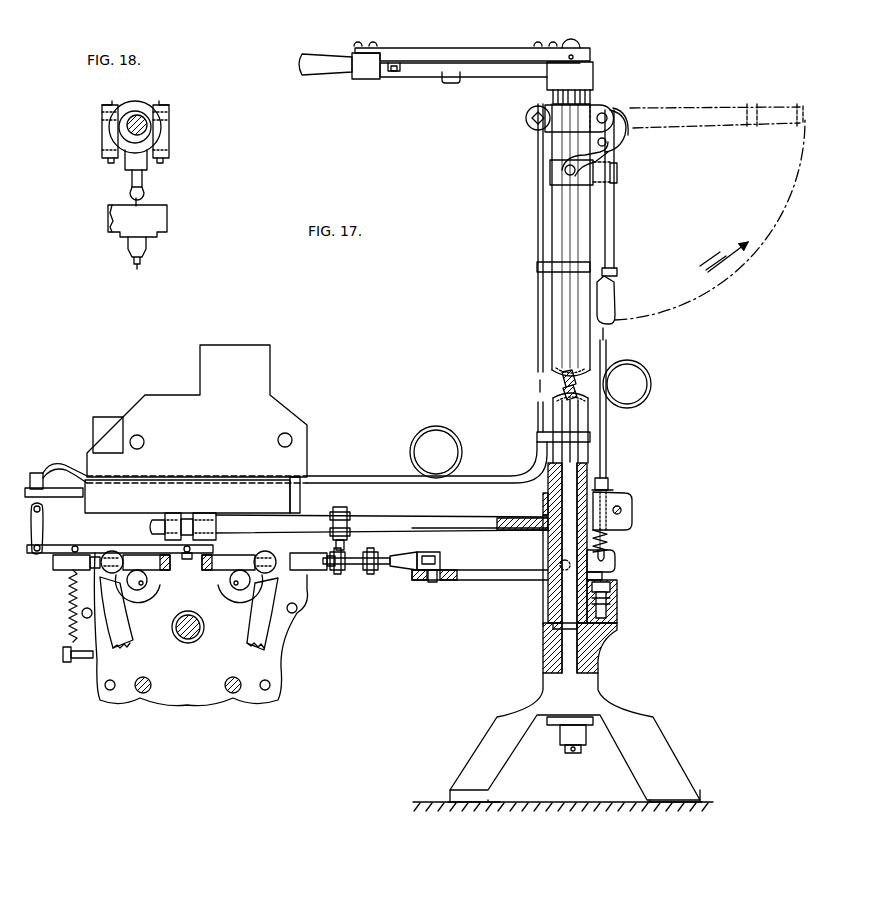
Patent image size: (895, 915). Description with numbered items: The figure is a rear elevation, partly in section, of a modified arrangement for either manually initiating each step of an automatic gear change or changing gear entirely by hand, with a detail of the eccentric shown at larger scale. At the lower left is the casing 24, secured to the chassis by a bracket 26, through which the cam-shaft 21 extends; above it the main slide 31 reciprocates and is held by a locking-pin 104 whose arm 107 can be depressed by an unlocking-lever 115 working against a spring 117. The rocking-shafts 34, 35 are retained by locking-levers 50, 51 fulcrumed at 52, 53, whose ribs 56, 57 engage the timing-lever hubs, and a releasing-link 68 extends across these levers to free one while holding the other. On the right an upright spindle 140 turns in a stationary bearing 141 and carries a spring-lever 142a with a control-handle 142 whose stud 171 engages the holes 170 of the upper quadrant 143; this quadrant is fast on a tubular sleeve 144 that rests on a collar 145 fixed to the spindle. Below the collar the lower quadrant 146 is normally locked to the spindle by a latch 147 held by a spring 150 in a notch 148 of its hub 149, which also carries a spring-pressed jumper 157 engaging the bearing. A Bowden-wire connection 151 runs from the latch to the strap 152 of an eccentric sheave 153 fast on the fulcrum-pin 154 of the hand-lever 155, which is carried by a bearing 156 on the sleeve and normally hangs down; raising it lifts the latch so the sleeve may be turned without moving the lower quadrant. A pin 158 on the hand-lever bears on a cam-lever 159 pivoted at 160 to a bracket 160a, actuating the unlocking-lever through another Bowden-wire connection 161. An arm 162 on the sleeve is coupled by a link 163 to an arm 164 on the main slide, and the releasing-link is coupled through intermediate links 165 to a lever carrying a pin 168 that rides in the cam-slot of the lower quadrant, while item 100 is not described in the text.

In FIG. 17, the cam-shaft 21 is at (188, 642).
In FIG. 17, the casing 24 is at (276, 700).
In FIG. 17, the bracket 26 is at (280, 408).
In FIG. 17, the main slide 31 is at (172, 512).
In FIG. 17, the rocking-shaft 34 is at (137, 585).
In FIG. 17, the rocking-shaft 35 is at (262, 593).
In FIG. 17, the locking-lever 50 is at (110, 640).
In FIG. 17, the locking-lever 51 is at (262, 638).
In FIG. 17, the fulcrum 52 is at (142, 693).
In FIG. 17, the fulcrum 53 is at (233, 693).
In FIG. 17, the rib 56 is at (120, 590).
In FIG. 17, the rib 57 is at (258, 580).
In FIG. 17, the releasing-link 68 is at (65, 572).
In FIG. 17, the plate 100 is at (90, 505).
In FIG. 17, the locking-pin 104 is at (203, 512).
In FIG. 17, the arm 107 is at (187, 565).
In FIG. 17, the unlocking-lever 115 is at (45, 555).
In FIG. 17, the spring 117 is at (70, 634).
In FIG. 17, the upright spindle 140 is at (560, 644).
In FIG. 17, the stationary bearing 141 is at (600, 660).
In FIG. 17, the control-handle 142 is at (318, 60).
In FIG. 17, the spring-lever 142a is at (456, 50).
In FIG. 17, the quadrant 143 is at (480, 70).
In FIG. 17, the tubular sleeve 144 is at (553, 300).
In FIG. 17, the collar 145 is at (545, 550).
In FIG. 17, the quadrant 146 is at (440, 577).
In FIG. 17, the latch 147 is at (615, 558).
In FIG. 17, the notch 148 is at (605, 576).
In FIG. 17, the hub 149 is at (545, 598).
In FIG. 17, the spring 150 is at (610, 537).
In FIG. 18, the Bowden-wire connection 151 is at (150, 196).
In FIG. 17, the Bowden-wire connection 151 is at (610, 463).
In FIG. 18, the strap 152 is at (160, 112).
In FIG. 18, the eccentric sheave 153 is at (165, 140).
In FIG. 18, the fulcrum-pin 154 is at (150, 126).
In FIG. 17, the fulcrum-pin 154 is at (605, 112).
In FIG. 17, the hand-lever 155 is at (617, 216).
In FIG. 17, the bearing 156 is at (556, 126).
In FIG. 17, the spring-pressed jumper 157 is at (617, 608).
In FIG. 17, the pin 158 is at (613, 148).
In FIG. 17, the cam-lever 159 is at (623, 140).
In FIG. 17, the pivot 160 is at (565, 172).
In FIG. 18, the bracket 160a is at (155, 222).
In FIG. 17, the bracket 160a is at (619, 176).
In FIG. 17, the Bowden-wire connection 161 is at (538, 330).
In FIG. 17, the arm 162 is at (385, 520).
In FIG. 17, the link 163 is at (336, 518).
In FIG. 17, the arm 164 is at (250, 520).
In FIG. 17, the intermediate link 165 is at (375, 575).
In FIG. 17, the pin 168 is at (432, 575).
In FIG. 17, the holes 170 is at (392, 62).
In FIG. 17, the stud 171 is at (396, 74).